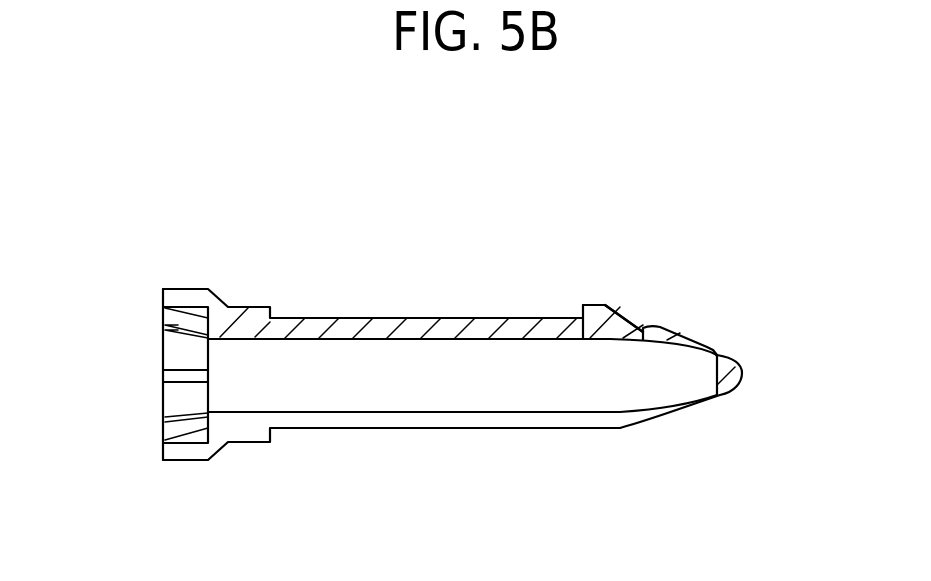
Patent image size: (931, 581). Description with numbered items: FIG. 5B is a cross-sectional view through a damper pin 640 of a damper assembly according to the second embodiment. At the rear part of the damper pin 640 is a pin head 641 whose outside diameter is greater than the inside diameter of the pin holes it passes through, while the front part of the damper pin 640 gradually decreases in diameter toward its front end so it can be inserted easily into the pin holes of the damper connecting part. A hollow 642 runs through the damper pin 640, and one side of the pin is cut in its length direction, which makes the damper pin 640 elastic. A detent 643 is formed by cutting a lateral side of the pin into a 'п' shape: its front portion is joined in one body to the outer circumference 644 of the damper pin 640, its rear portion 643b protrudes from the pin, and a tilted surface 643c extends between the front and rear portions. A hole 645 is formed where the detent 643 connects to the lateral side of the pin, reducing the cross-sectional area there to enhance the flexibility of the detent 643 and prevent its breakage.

The damper pin 640 is at (437, 455).
The pin head 641 is at (183, 297).
The hollow 642 is at (235, 394).
The detent 643 is at (578, 314).
The rear portion 643b is at (601, 303).
The tilted surface 643c is at (622, 312).
The outer circumference 644 is at (418, 318).
The hole 645 is at (673, 338).